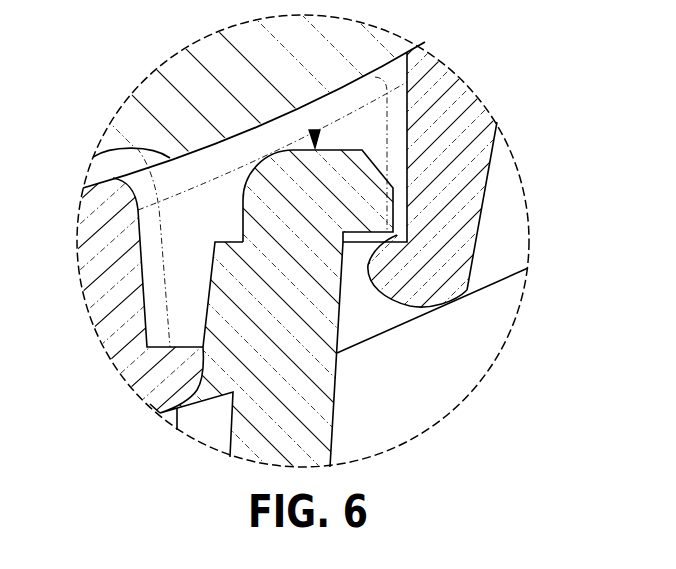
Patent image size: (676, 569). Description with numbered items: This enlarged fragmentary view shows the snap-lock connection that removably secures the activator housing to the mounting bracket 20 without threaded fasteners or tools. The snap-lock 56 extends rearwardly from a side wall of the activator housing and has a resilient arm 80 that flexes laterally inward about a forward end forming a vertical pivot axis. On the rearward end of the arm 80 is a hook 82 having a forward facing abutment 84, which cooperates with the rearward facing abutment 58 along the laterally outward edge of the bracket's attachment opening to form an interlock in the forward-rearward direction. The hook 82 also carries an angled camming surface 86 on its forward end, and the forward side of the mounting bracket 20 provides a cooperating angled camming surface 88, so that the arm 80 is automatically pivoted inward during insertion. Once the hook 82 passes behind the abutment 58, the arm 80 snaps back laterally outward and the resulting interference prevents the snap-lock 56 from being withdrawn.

The mounting bracket 20 is at (93, 157).
The snap-lock 56 is at (314, 130).
The rearward facing abutment 58 is at (397, 235).
The arm 80 is at (335, 408).
The hook 82 is at (345, 150).
The forward facing abutment 84 is at (422, 306).
The angled camming surface 86 is at (377, 180).
The cooperating angled camming surface 88 is at (370, 272).